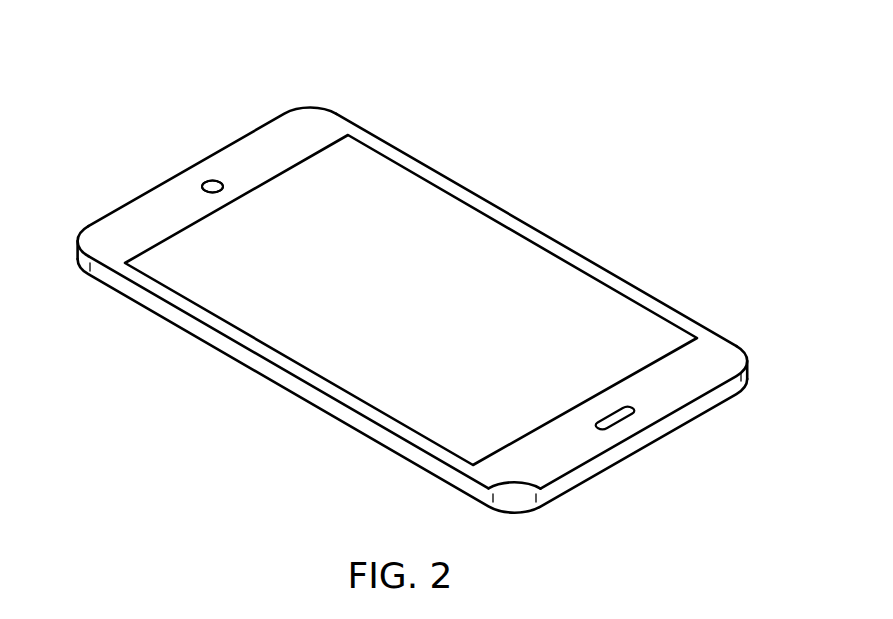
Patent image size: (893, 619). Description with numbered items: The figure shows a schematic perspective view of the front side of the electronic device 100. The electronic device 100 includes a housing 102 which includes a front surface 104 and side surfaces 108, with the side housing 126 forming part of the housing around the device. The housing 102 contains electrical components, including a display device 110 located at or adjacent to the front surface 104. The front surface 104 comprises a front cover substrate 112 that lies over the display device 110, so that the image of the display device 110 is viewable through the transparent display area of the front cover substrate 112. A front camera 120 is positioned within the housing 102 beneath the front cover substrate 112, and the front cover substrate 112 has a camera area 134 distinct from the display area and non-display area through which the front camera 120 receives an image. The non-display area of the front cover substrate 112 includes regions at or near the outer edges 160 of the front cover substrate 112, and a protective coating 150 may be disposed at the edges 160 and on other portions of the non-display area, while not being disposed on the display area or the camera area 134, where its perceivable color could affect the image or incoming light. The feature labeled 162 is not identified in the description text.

The electronic device 100 is at (412, 275).
The housing 102 is at (334, 126).
The front surface 104 is at (718, 348).
The side surfaces 108 is at (176, 328).
The display device 110 is at (430, 162).
The front cover substrate 112 is at (450, 427).
The front camera 120 is at (218, 200).
The side housing 126 is at (664, 438).
The camera area 134 is at (212, 172).
The protective coating 150 is at (141, 218).
The outer edges 160 is at (514, 214).
The sidewall 162 is at (266, 378).